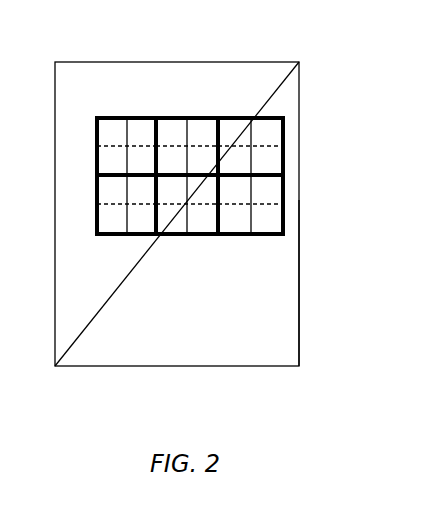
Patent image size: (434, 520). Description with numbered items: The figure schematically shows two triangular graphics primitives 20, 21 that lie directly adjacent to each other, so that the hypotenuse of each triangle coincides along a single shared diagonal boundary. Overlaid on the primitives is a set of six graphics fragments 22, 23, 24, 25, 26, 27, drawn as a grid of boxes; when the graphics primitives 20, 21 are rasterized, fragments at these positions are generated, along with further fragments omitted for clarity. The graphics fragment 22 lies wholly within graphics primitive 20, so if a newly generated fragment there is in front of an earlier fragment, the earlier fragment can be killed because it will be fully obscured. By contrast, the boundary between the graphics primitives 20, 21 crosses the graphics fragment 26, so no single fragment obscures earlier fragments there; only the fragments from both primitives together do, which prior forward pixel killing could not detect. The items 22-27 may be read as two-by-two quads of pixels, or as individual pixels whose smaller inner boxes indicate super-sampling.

The graphics primitive 20 is at (140, 62).
The graphics primitive 21 is at (299, 300).
The graphics fragment 22 is at (138, 116).
The graphics fragment 23 is at (193, 116).
The graphics fragment 24 is at (285, 116).
The graphics fragment 25 is at (97, 236).
The graphics fragment 26 is at (190, 236).
The graphics fragment 27 is at (265, 236).